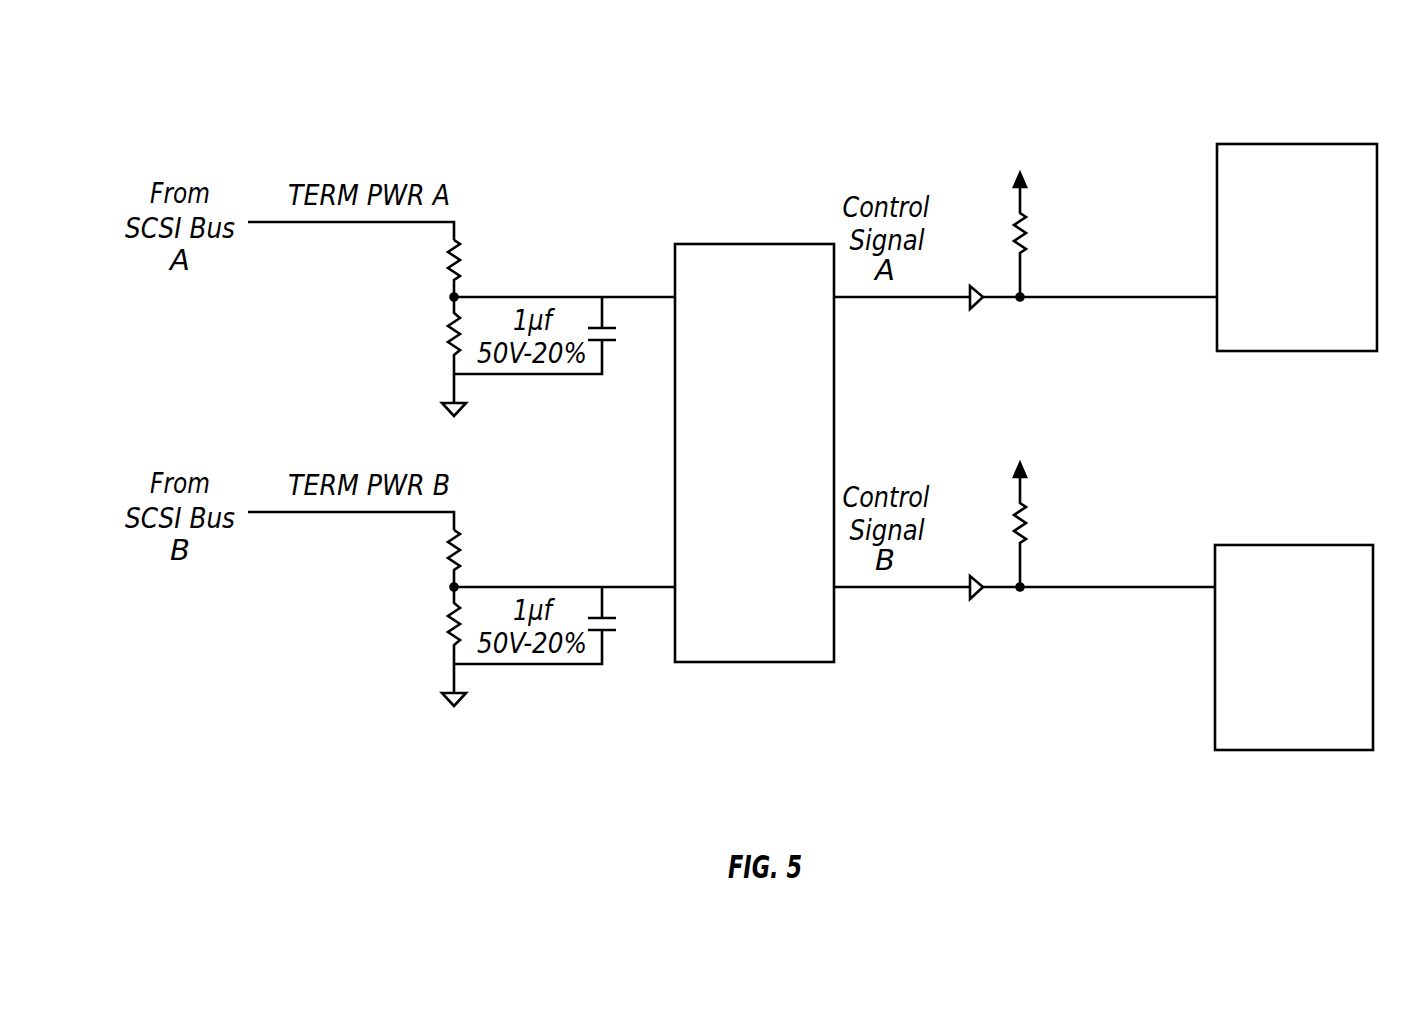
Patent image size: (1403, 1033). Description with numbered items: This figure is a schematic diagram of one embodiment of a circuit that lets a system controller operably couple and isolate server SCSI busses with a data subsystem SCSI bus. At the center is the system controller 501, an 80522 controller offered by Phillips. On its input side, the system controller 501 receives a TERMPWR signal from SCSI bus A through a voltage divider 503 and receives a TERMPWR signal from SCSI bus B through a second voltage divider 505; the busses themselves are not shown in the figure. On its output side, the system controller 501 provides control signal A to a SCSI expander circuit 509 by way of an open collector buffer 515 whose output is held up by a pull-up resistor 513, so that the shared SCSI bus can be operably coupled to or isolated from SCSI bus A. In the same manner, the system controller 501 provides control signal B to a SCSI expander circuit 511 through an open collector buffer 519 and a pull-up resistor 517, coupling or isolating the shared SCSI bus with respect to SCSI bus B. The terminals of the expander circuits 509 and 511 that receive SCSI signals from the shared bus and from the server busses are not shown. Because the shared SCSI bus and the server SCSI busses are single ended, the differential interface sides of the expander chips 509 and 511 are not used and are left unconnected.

The system controller 501 is at (775, 465).
The voltage divider 503 is at (446, 297).
The voltage divider 505 is at (446, 587).
The SCSI expander circuit 509 is at (1315, 263).
The SCSI expander circuit 511 is at (1313, 660).
The pull-up resistor 513 is at (1013, 230).
The open collector buffer 515 is at (982, 260).
The pull-up resistor 517 is at (1013, 520).
The open collector buffer 519 is at (982, 550).